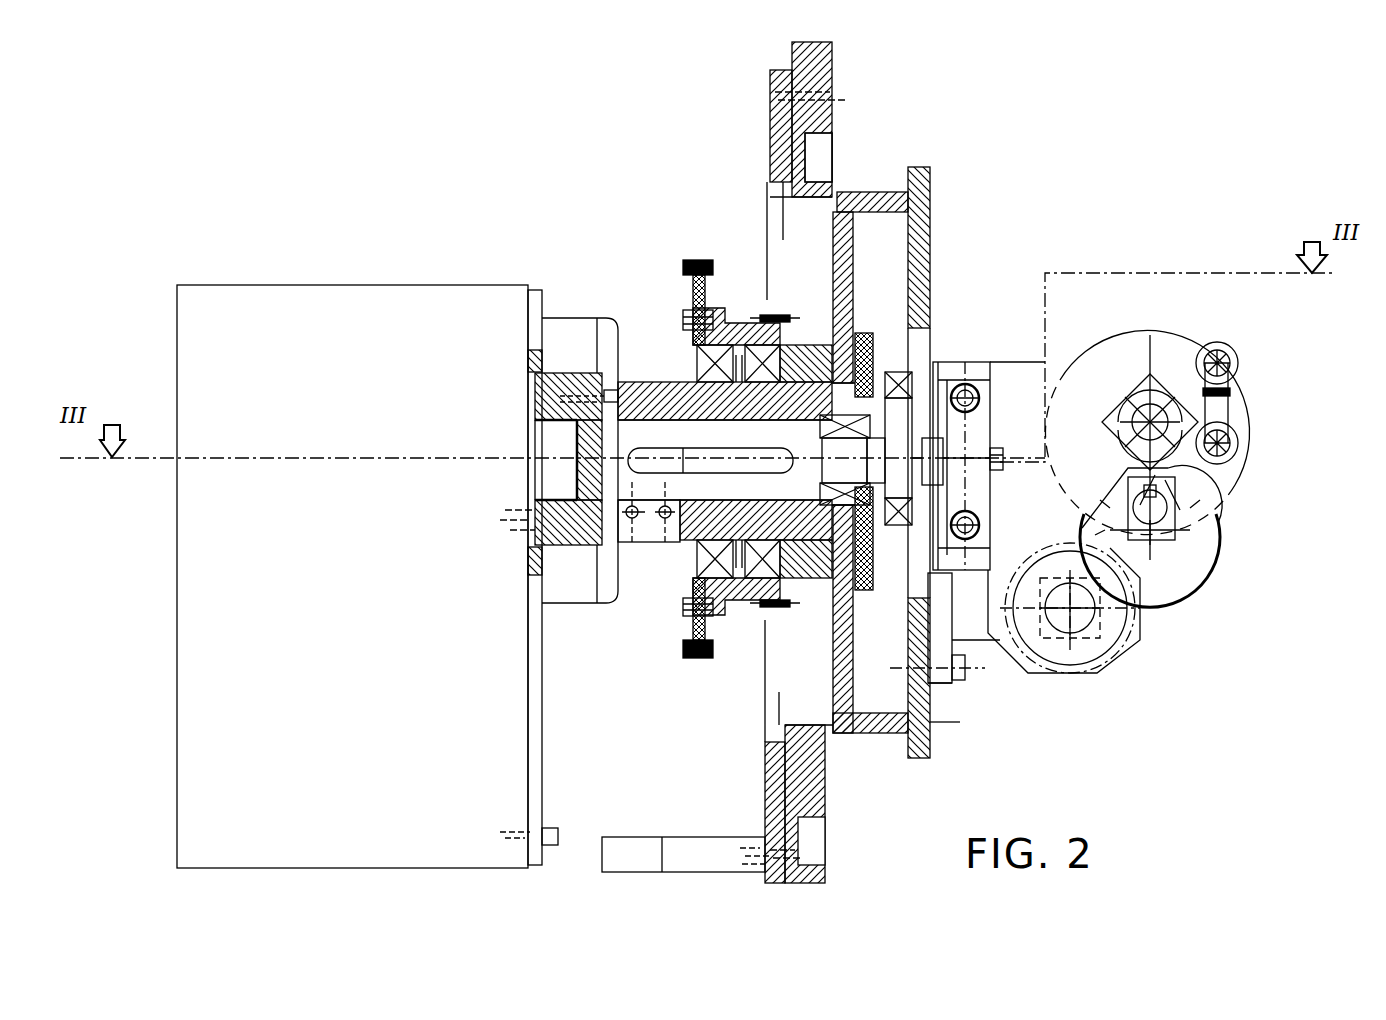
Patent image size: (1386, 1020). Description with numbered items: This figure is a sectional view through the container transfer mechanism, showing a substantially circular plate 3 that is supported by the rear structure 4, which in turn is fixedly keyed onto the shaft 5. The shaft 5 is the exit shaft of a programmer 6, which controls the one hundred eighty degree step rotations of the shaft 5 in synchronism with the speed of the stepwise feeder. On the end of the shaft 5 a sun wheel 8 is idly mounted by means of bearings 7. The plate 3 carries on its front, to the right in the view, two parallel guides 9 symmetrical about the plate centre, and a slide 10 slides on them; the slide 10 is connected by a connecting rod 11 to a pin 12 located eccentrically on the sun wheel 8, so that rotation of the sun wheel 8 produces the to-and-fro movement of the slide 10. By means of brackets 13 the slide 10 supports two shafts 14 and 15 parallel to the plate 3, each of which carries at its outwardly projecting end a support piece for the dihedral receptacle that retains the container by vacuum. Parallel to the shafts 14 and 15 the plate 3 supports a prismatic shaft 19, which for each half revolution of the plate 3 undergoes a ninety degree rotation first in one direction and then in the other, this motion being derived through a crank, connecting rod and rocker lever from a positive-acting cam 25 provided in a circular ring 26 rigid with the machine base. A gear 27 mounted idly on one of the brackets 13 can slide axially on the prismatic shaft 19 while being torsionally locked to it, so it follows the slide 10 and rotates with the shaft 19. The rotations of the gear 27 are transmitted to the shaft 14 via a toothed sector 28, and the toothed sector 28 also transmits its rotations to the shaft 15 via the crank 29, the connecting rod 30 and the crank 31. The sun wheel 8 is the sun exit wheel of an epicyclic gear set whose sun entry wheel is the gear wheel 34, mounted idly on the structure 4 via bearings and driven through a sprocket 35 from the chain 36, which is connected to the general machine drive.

The circular plate 3 is at (930, 222).
The rear structure 4 is at (665, 382).
The shaft 5 is at (657, 520).
The programmer 6 is at (398, 285).
The bearings 7 is at (822, 575).
The sun wheel 8 is at (862, 590).
The parallel guides 9 is at (975, 385).
The slide 10 is at (985, 490).
The connecting rod 11 is at (897, 490).
The pin 12 is at (912, 375).
The brackets 13 is at (1048, 352).
The shaft 14 is at (1178, 560).
The shaft 15 is at (1138, 352).
The prismatic shaft 19 is at (1082, 625).
The positive-acting cam 25 is at (820, 160).
The circular ring 26 is at (835, 50).
The gear 27 is at (1128, 610).
The toothed sector 28 is at (1220, 545).
The crank 29 is at (1238, 487).
The connecting rod 30 is at (1232, 415).
The crank 31 is at (1195, 345).
The gear wheel 34 is at (775, 315).
The sprocket 35 is at (690, 300).
The chain 36 is at (698, 262).